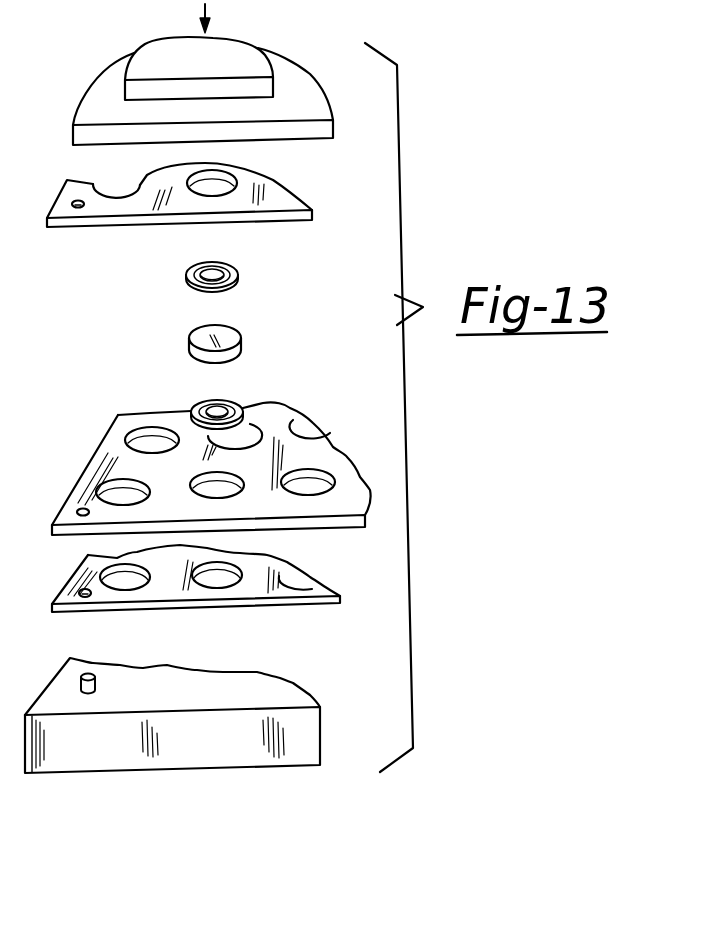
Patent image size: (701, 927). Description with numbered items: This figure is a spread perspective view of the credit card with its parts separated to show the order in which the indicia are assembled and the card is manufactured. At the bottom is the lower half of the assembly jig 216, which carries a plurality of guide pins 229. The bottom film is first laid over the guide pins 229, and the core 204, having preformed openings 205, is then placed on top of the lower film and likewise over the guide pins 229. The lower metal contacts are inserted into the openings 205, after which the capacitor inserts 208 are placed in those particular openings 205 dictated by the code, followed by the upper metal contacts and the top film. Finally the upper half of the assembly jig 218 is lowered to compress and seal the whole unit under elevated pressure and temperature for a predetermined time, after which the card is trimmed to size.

The core 204 is at (224, 484).
The preformed openings 205 is at (312, 477).
The capacitor inserts 208 is at (232, 340).
The assembly jig 216 is at (172, 717).
The upper half of the assembly jig 218 is at (230, 53).
The guide pins 229 is at (103, 675).